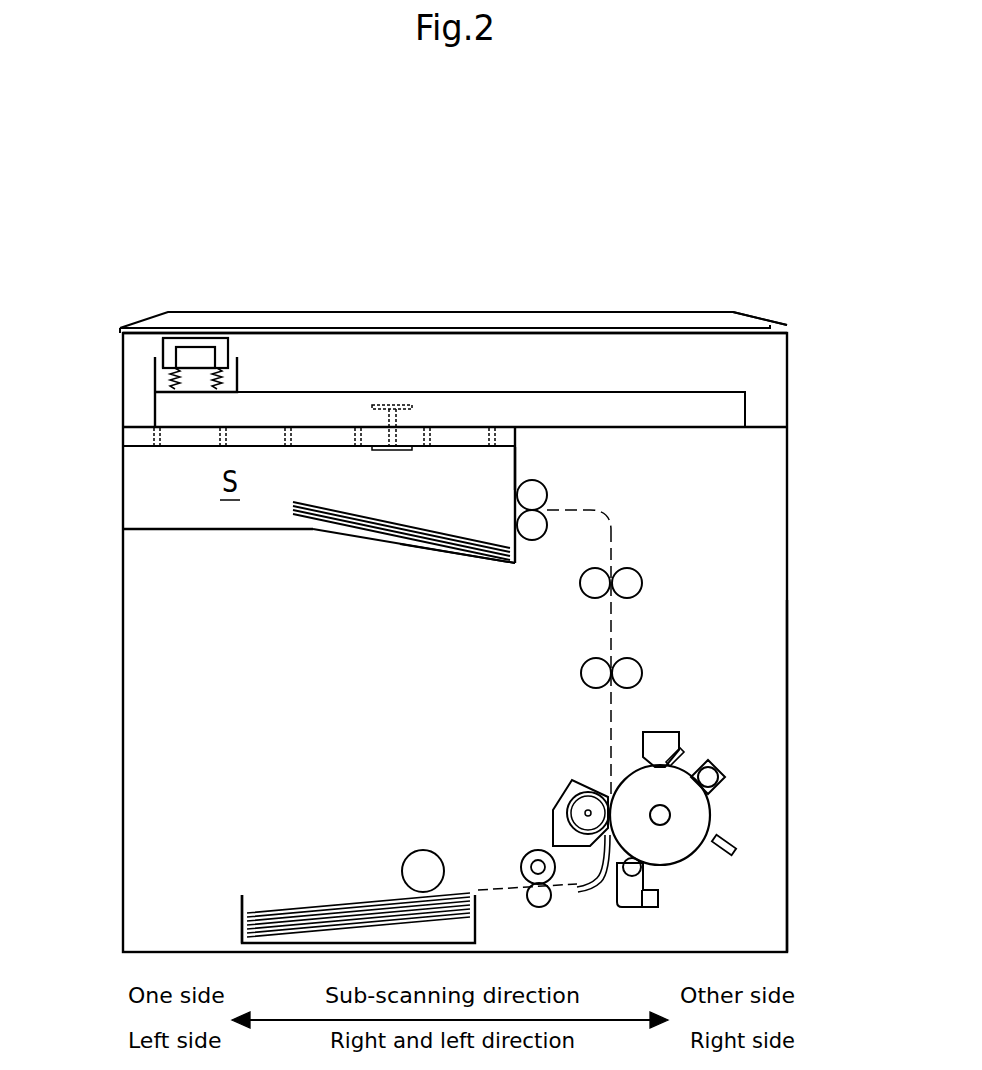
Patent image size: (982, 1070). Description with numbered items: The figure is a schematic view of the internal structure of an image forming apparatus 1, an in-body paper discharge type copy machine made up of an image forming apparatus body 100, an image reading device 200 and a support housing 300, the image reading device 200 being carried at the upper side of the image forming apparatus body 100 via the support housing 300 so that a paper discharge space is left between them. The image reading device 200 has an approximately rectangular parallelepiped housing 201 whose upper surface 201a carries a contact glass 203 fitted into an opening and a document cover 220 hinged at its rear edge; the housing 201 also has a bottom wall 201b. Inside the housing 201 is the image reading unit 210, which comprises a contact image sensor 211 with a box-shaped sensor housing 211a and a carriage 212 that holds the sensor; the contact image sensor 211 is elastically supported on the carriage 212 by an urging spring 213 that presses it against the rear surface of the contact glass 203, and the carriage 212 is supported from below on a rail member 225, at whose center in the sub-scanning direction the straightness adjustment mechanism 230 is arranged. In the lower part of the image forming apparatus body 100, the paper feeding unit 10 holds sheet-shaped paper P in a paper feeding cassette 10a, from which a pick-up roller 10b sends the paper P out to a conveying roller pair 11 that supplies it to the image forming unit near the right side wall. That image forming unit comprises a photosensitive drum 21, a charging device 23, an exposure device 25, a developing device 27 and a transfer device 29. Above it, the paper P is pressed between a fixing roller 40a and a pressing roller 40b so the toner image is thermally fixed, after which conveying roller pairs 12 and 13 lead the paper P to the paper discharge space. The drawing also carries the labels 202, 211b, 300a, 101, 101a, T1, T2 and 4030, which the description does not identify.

The image forming apparatus 1 is at (85, 355).
The image forming apparatus body 100 is at (787, 690).
The image reading device 200 is at (791, 395).
The housing 201 is at (787, 345).
The upper surface 201a is at (778, 320).
The bottom wall 201b is at (190, 428).
The document discharge tray 202 is at (300, 437).
The contact glass 203 is at (552, 327).
The image reading unit 210 is at (137, 402).
The contact image sensor 211 is at (237, 348).
The sensor housing 211a is at (160, 347).
The image sensor 211b is at (196, 360).
The carriage 212 is at (240, 372).
The urging spring 213 is at (170, 378).
The document cover 220 is at (645, 322).
The rail member 225 is at (352, 392).
The straightness adjustment mechanism 230 is at (428, 407).
The support housing 300 is at (787, 470).
The document feed opening 300a is at (515, 520).
The document tray 101 is at (282, 528).
The document placing surface 101a is at (377, 533).
The paper P is at (288, 525).
The conveying roller pair 13 is at (548, 508).
The conveying roller pair 12 is at (622, 600).
The first conveying path T1 is at (612, 547).
The second conveying path T2 is at (563, 498).
The fixing roller 40a is at (626, 688).
The pressing roller 40b is at (582, 688).
The developing device and conveying unit 4030 is at (709, 722).
The photosensitive drum 21 is at (688, 865).
The charging device 23 is at (715, 768).
The exposure device 25 is at (738, 846).
The developing device 27 is at (634, 907).
The transfer device 29 is at (552, 815).
The conveying roller pair 11 is at (524, 887).
The paper feeding unit 10 is at (312, 838).
The paper feeding cassette 10a is at (240, 912).
The pick-up roller 10b is at (420, 850).